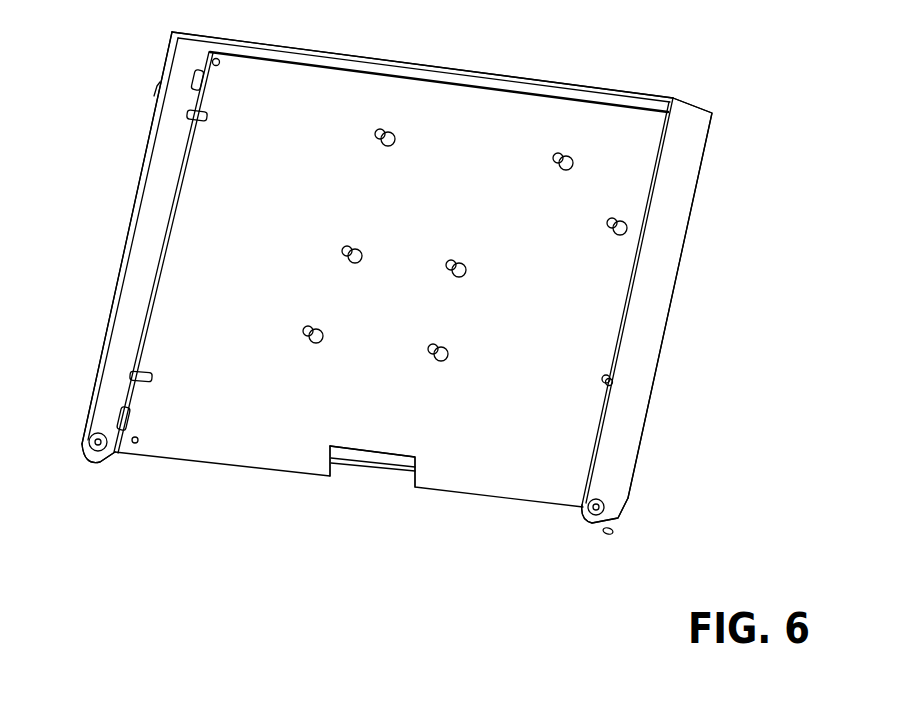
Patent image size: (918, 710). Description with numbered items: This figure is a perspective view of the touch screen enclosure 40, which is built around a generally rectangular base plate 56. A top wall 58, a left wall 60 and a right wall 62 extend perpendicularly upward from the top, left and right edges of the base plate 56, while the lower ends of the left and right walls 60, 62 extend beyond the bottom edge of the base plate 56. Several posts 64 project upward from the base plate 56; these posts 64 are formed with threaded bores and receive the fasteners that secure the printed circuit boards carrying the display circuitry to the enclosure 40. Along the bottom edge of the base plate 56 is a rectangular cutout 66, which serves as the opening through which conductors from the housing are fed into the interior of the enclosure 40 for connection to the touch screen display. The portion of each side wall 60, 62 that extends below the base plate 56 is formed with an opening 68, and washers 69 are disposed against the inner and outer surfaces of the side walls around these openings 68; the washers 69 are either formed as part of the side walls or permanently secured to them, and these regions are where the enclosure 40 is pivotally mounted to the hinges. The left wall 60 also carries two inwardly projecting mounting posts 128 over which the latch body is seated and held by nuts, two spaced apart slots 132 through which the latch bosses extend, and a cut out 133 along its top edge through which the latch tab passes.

The touch screen enclosure 40 is at (684, 56).
The base plate 56 is at (458, 218).
The top wall 58 is at (408, 56).
The left wall 60 is at (114, 278).
The right wall 62 is at (637, 332).
The posts 64 is at (348, 266).
The rectangular cutout 66 is at (378, 478).
The opening 68 is at (112, 465).
The washers 69 is at (84, 444).
The mounting posts 128 is at (208, 117).
The slots 132 is at (205, 82).
The cut out 133 is at (161, 67).